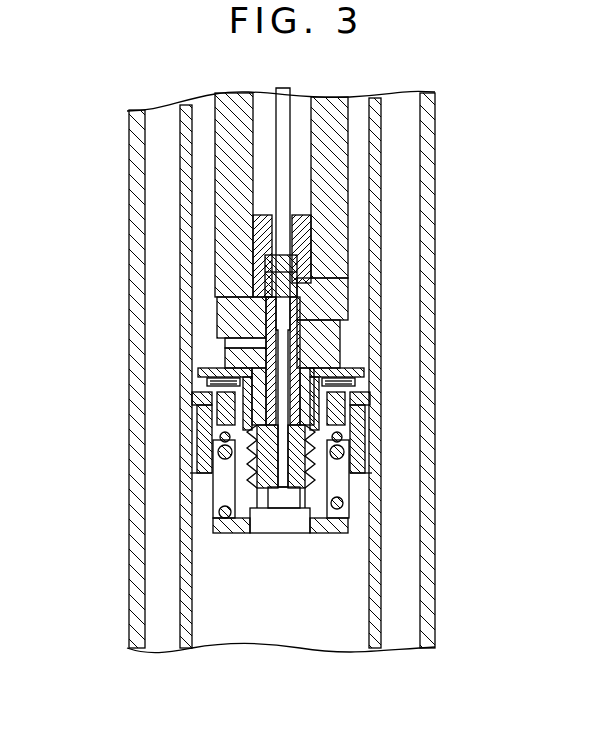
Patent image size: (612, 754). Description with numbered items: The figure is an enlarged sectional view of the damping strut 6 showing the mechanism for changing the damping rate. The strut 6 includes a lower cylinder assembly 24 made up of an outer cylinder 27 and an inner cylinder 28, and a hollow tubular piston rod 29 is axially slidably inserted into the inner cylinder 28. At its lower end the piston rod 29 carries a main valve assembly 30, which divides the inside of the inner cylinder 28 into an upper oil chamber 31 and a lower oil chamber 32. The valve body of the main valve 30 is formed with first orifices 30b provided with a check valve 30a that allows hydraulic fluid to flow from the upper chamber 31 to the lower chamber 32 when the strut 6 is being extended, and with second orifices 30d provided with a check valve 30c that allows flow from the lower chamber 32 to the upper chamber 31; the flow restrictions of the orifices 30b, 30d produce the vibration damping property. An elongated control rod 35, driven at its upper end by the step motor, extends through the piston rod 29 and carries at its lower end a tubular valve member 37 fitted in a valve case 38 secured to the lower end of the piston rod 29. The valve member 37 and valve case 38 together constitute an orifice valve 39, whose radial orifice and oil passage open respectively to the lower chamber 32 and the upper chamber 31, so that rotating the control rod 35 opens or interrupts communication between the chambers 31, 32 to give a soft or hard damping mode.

The damping strut 6 is at (128, 133).
The lower cylinder assembly 24 is at (437, 134).
The outer cylinder 27 is at (137, 190).
The inner cylinder 28 is at (183, 216).
The piston rod 29 is at (325, 105).
The main valve assembly 30 is at (360, 381).
The check valve 30a is at (344, 436).
The first orifices 30b is at (322, 408).
The check valve 30c is at (205, 377).
The second orifices 30d is at (200, 412).
The upper oil chamber 31 is at (356, 208).
The lower oil chamber 32 is at (352, 603).
The control rod 35 is at (282, 100).
The tubular valve member 37 is at (284, 478).
The valve case 38 is at (218, 297).
The orifice valve 39 is at (266, 336).